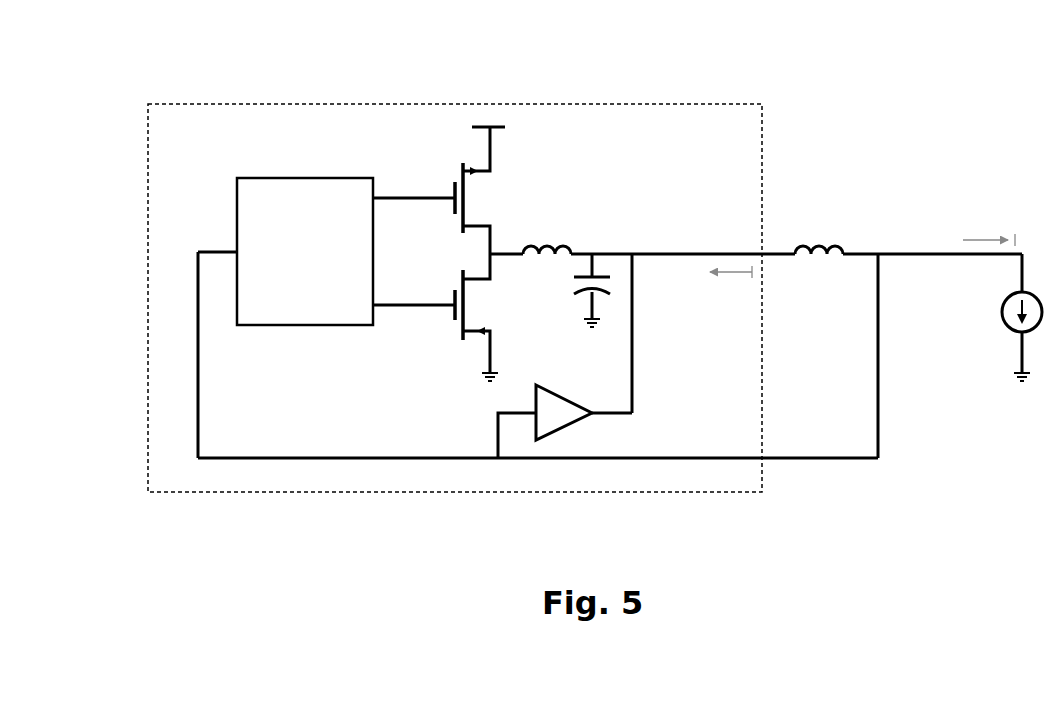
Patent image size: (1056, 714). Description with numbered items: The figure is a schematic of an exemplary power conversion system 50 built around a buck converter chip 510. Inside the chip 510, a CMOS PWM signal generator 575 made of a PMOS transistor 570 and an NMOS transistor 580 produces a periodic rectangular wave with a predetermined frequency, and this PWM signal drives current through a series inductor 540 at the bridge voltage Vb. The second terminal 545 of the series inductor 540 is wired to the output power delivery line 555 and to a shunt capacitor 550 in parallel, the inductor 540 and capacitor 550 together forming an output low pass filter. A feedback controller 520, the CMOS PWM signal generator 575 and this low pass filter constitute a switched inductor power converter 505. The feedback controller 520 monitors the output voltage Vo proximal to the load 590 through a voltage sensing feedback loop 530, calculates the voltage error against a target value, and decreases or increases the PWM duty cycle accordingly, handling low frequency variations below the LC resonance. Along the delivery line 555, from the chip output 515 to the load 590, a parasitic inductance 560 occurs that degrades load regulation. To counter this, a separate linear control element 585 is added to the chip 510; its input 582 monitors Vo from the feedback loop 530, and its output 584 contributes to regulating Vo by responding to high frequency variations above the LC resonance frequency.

The power conversion system 50 is at (208, 48).
The buck converter chip 510 is at (285, 93).
The feedback controller 520 is at (305, 251).
The PMOS transistor 570 is at (452, 178).
The NMOS transistor 580 is at (430, 318).
The CMOS PWM signal generator 575 is at (526, 198).
The series inductor 540 is at (558, 226).
The second terminal 545 is at (578, 240).
The switched inductor power converter 505 is at (640, 153).
The shunt capacitor 550 is at (566, 280).
The linear control element 585 is at (584, 433).
The input 582 is at (526, 401).
The output 584 is at (596, 392).
The delivery line 555 is at (670, 238).
The output 515 is at (772, 240).
The parasitic inductance 560 is at (832, 236).
The voltage sensing feedback loop 530 is at (840, 485).
The load 590 is at (989, 320).